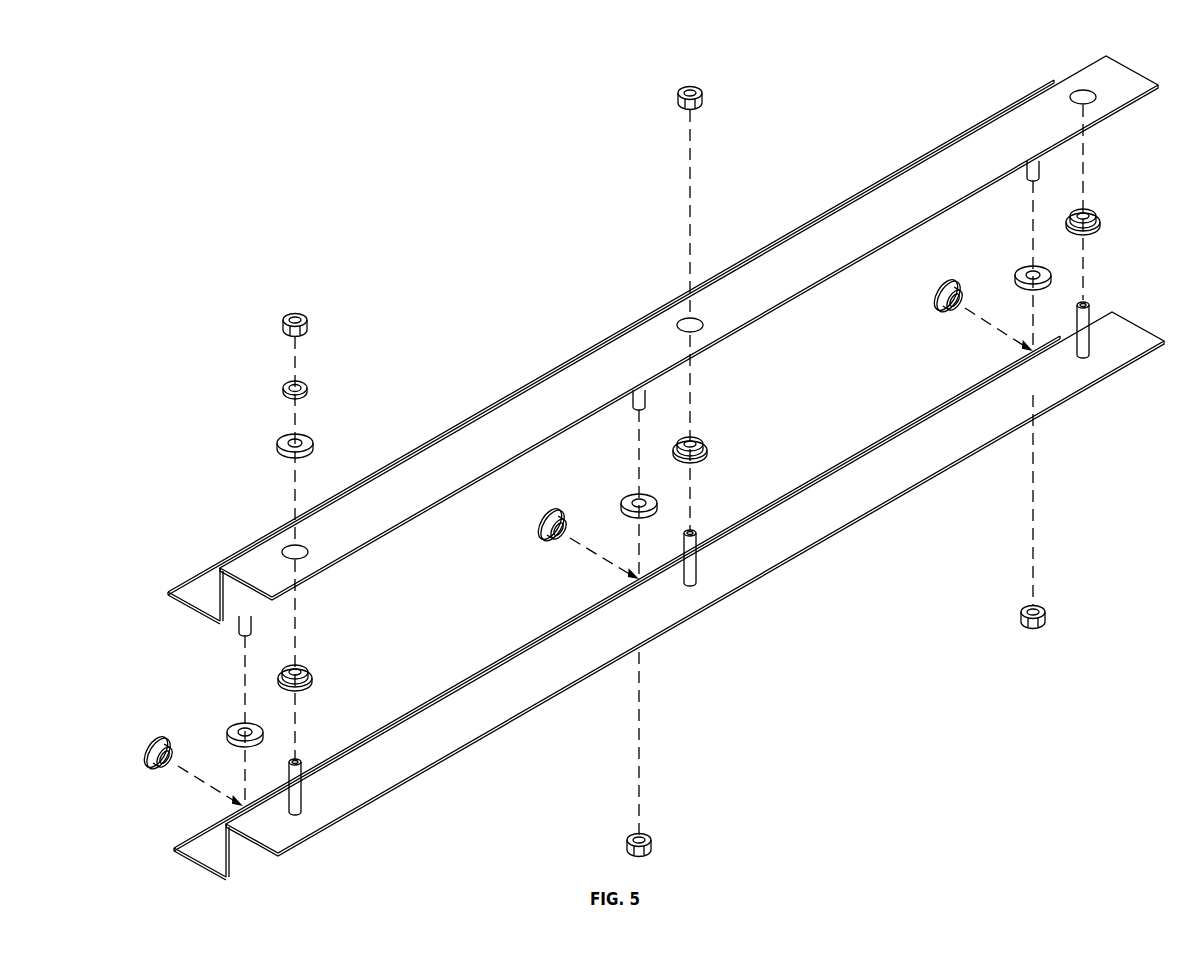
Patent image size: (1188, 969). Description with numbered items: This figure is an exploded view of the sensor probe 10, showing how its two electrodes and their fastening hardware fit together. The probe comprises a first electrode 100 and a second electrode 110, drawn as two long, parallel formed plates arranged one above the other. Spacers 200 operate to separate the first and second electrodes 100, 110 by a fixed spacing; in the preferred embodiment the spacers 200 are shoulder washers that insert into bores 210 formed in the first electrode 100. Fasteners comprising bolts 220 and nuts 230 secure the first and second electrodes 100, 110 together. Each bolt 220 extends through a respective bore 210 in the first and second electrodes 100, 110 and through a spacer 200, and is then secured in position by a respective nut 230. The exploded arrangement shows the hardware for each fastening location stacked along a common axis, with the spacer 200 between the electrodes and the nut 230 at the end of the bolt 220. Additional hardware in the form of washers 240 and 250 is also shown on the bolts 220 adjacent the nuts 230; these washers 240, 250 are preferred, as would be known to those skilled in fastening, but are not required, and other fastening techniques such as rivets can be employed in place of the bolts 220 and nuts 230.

The bracket fastening assembly 10 is at (212, 288).
The first electrode 100 is at (195, 585).
The second electrode 110 is at (195, 845).
The spacer 200 is at (312, 672).
The bore 210 is at (303, 555).
The bolt 220 is at (239, 627).
The nut 230 is at (306, 319).
The washer 240 is at (307, 385).
The washer 250 is at (312, 441).